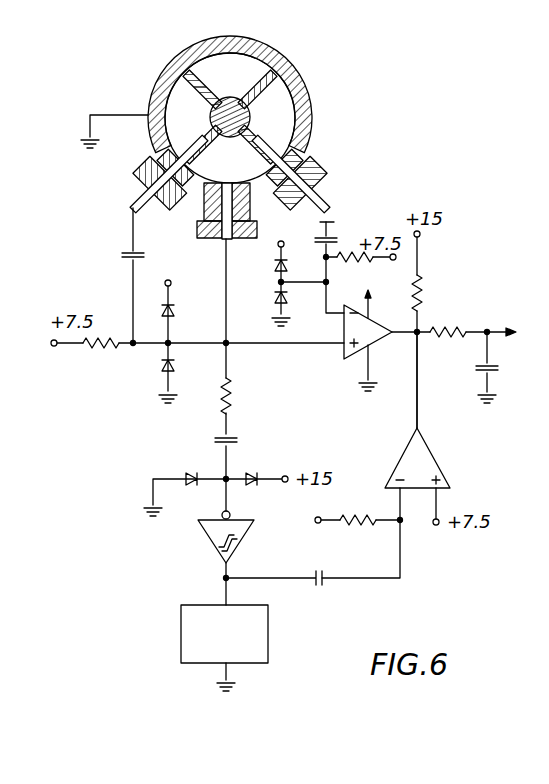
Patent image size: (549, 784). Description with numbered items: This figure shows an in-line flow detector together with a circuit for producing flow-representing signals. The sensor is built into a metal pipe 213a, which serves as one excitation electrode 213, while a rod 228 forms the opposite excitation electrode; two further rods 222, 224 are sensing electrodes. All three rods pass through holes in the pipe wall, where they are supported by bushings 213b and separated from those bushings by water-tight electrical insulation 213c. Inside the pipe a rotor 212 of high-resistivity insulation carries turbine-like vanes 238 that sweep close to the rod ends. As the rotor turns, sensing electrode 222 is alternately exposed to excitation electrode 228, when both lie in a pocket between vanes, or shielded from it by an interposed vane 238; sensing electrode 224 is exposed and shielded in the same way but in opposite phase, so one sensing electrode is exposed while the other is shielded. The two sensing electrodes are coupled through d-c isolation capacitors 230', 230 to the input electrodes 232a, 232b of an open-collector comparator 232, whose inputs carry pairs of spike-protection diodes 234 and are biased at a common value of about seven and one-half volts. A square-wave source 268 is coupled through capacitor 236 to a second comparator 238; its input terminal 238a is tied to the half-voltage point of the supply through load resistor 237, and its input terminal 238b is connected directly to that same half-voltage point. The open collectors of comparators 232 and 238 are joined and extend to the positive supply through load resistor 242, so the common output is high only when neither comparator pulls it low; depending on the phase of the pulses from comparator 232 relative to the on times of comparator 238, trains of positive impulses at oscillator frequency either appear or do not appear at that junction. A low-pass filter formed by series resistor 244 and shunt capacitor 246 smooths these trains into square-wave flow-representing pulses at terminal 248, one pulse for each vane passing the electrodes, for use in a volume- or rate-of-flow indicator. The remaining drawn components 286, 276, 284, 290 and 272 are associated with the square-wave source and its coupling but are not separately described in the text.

The vanes 238 is at (212, 78).
The metal pipe 213a is at (300, 88).
The rotor 212 is at (262, 117).
The excitation electrode 213 is at (146, 112).
The bushings 213b is at (133, 182).
The water-tight electrical insulation 213c is at (156, 165).
The sensing electrode 222 is at (148, 208).
The sensing electrode 224 is at (322, 210).
The excitation electrode 228 is at (224, 248).
The d-c isolation capacitor 230' is at (107, 260).
The d-c isolation capacitor 230 is at (343, 235).
The spike-protection diodes 234 is at (160, 352).
The comparator 232 is at (360, 362).
The input electrode 232a is at (340, 313).
The input electrode 232b is at (338, 346).
The load resistor 242 is at (423, 293).
The series resistor 244 is at (440, 332).
The output terminal 248 is at (487, 332).
The shunt capacitor 246 is at (502, 366).
The resistor 286 is at (234, 400).
The capacitor 276 is at (218, 440).
The diode 284 is at (200, 470).
The diode 290 is at (254, 472).
The inverter 272 is at (246, 547).
The square-wave source 268 is at (224, 648).
The input terminal 238a is at (396, 506).
The input terminal 238b is at (440, 514).
The load resistor 237 is at (370, 528).
The capacitor 236 is at (318, 588).